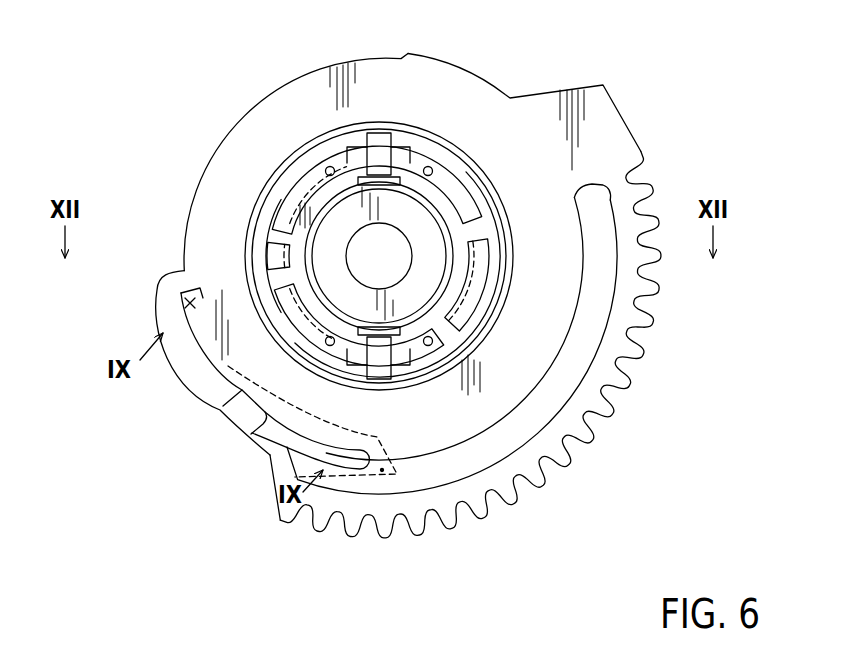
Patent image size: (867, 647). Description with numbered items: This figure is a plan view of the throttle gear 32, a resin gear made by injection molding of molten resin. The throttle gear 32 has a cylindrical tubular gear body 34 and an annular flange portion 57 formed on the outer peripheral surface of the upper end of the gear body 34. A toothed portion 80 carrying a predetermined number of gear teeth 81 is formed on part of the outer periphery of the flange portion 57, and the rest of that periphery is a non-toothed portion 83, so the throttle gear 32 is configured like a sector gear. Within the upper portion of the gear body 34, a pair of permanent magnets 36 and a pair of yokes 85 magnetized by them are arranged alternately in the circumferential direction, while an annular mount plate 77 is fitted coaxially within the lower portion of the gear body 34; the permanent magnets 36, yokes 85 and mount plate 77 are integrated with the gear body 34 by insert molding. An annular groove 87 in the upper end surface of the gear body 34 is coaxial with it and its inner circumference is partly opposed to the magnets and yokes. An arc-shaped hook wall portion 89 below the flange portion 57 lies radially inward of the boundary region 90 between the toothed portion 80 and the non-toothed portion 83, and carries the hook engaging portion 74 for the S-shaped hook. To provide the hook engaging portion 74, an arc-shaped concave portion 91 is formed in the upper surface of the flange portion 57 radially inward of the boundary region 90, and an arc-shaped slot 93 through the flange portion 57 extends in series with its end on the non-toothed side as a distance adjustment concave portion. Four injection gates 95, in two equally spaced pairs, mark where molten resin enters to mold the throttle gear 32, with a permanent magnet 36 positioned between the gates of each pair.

The throttle gear 32 is at (513, 88).
The gear body 34 is at (460, 200).
The permanent magnets 36 is at (382, 165).
The flange portion 57 is at (206, 213).
The hook engaging portion 74 is at (236, 410).
The mount plate 77 is at (337, 222).
The toothed portion 80 is at (652, 340).
The gear teeth 81 is at (655, 290).
The non-toothed portion 83 is at (283, 85).
The yokes 85 is at (300, 215).
The annular groove 87 is at (404, 142).
The hook wall portion 89 is at (385, 478).
The boundary region 90 is at (268, 456).
The arc-shaped concave portion 91 is at (250, 429).
The arc-shaped slot 93 is at (157, 281).
The injection gates 95 is at (329, 166).